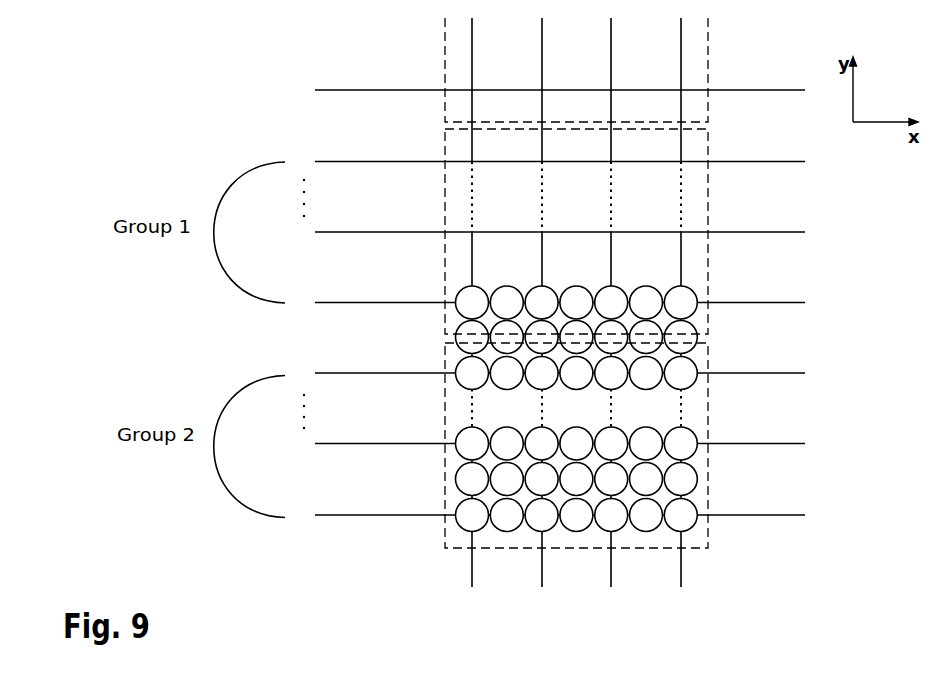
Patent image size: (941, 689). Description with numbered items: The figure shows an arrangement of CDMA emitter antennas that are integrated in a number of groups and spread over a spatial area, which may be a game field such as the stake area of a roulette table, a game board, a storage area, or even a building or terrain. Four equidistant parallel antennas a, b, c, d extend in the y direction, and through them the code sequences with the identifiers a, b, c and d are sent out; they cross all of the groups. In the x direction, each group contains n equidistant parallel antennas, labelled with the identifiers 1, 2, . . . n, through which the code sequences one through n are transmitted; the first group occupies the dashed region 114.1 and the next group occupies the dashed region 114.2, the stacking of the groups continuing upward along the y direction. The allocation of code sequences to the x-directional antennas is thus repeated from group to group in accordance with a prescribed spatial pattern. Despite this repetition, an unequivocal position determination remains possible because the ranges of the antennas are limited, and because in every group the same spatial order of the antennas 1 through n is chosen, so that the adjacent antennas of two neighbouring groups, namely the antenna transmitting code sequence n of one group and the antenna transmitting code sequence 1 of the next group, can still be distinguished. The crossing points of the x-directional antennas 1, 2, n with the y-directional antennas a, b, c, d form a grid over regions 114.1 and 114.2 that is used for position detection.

The spatial area of first antenna group 114.1 is at (709, 403).
The spatial area of second antenna group 114.2 is at (709, 191).
The code sequence identifier 1 antenna 1 is at (552, 302).
The code sequence identifier 2 antenna 2 is at (552, 337).
The code sequence identifier n antenna n is at (552, 267).
The code sequence identifier a antenna a is at (473, 314).
The code sequence identifier b antenna b is at (543, 314).
The code sequence identifier c antenna c is at (611, 314).
The code sequence identifier d antenna d is at (682, 314).